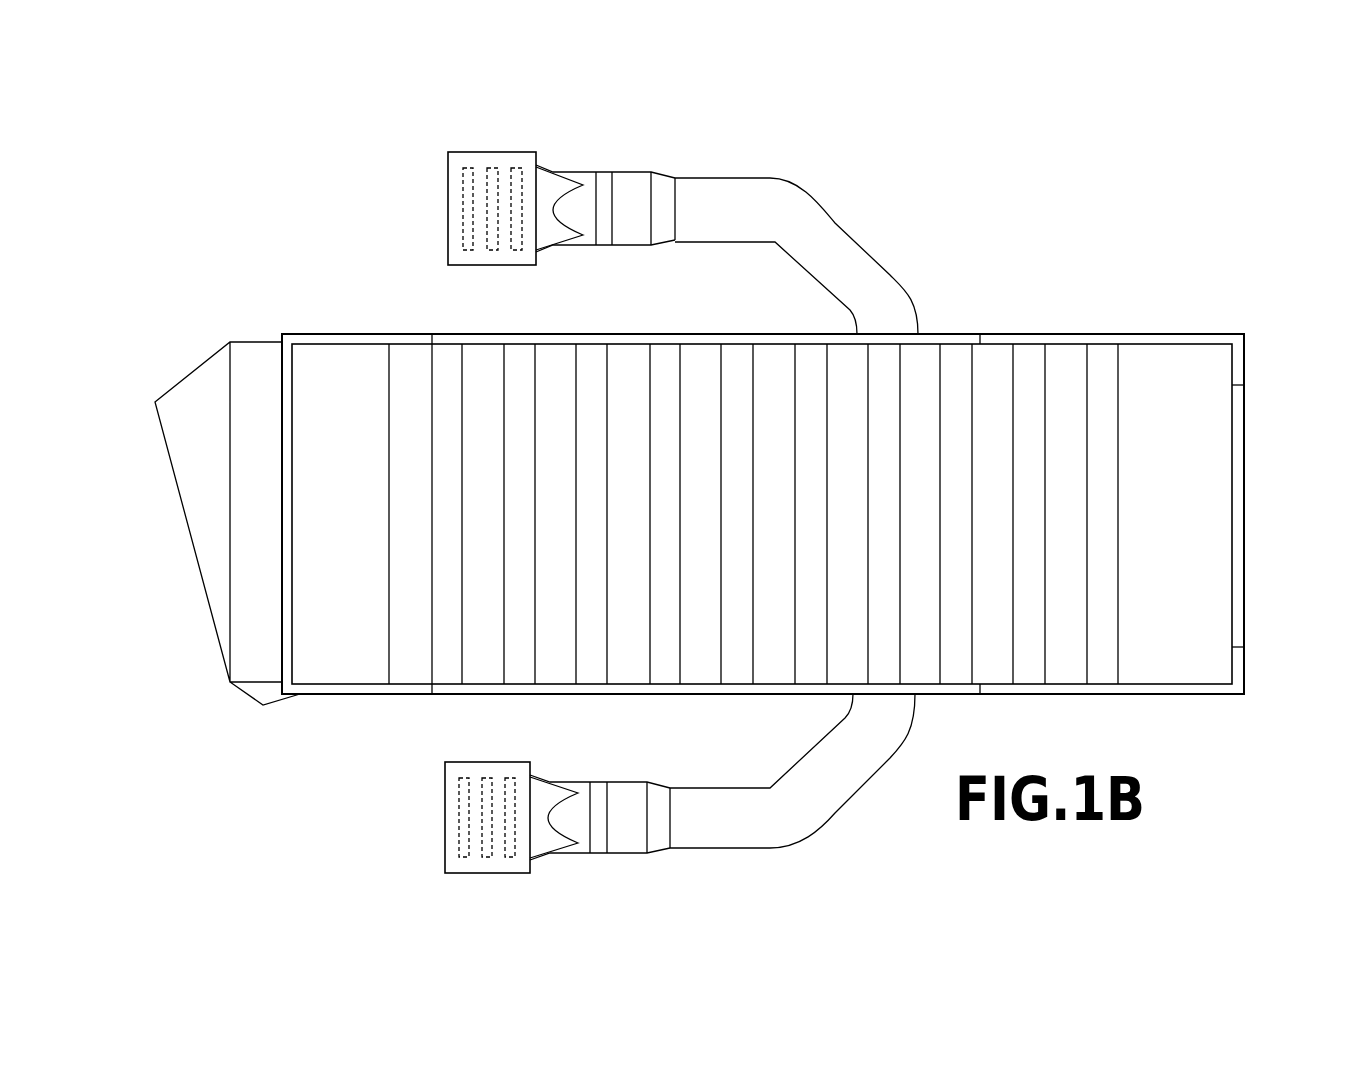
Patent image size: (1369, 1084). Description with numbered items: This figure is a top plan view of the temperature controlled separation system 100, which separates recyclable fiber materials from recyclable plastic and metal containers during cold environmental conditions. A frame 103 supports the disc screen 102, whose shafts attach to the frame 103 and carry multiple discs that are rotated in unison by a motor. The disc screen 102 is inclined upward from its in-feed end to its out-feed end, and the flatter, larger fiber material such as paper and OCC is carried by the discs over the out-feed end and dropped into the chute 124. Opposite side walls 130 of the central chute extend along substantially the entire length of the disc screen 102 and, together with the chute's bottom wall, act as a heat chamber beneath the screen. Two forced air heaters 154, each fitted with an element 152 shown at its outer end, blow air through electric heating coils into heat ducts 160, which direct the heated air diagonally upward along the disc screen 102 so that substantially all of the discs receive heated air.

The temperature controlled separation system 100 is at (1146, 286).
The disc screen 102 is at (1148, 480).
The frame 103 is at (1245, 514).
The chute 124 is at (186, 521).
The side walls 130 is at (1018, 343).
The connector head 152 is at (448, 212).
The forced air heater 154 is at (636, 140).
The heat duct 160 is at (772, 178).